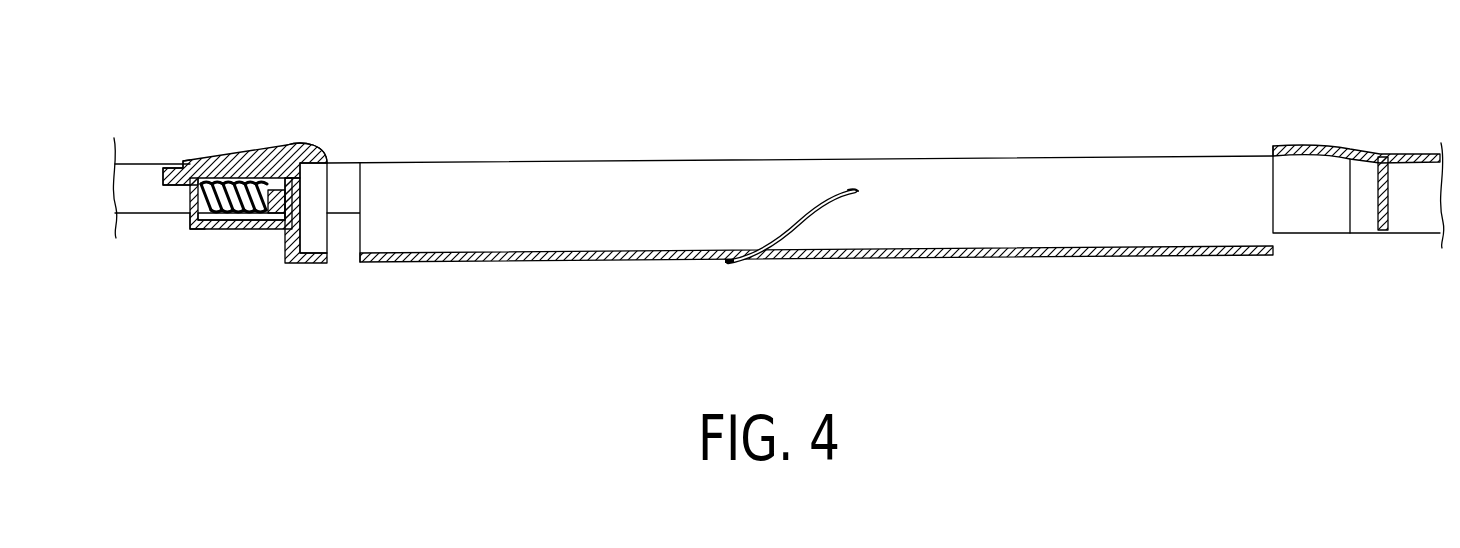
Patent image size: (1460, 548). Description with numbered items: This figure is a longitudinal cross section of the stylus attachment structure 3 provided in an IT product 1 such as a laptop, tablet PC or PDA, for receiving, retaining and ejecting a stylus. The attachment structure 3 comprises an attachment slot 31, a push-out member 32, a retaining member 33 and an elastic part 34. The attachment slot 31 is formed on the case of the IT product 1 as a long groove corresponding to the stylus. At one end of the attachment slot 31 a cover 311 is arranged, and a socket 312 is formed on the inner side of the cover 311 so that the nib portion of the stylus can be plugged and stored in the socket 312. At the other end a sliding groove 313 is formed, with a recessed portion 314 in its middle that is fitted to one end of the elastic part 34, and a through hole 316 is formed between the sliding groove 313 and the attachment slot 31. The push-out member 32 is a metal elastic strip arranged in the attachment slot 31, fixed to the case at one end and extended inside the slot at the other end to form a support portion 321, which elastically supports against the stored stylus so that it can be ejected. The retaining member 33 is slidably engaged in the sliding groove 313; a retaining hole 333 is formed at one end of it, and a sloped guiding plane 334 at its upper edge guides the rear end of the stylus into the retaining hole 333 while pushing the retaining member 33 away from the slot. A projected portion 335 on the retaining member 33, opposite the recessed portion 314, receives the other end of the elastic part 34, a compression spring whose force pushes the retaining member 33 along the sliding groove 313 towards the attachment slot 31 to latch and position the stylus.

The IT product 1 is at (138, 126).
The stylus attachment structure 3 is at (262, 100).
The attachment slot 31 is at (437, 187).
The cover 311 is at (1315, 150).
The socket 312 is at (1287, 172).
The sliding groove 313 is at (183, 165).
The recessed portion 314 is at (200, 230).
The through hole 316 is at (340, 187).
The push-out member 32 is at (792, 232).
The support portion 321 is at (853, 190).
The retaining member 33 is at (228, 162).
The retaining hole 333 is at (313, 240).
The guiding plane 334 is at (310, 147).
The projected portion 335 is at (278, 230).
The elastic part 34 is at (228, 230).